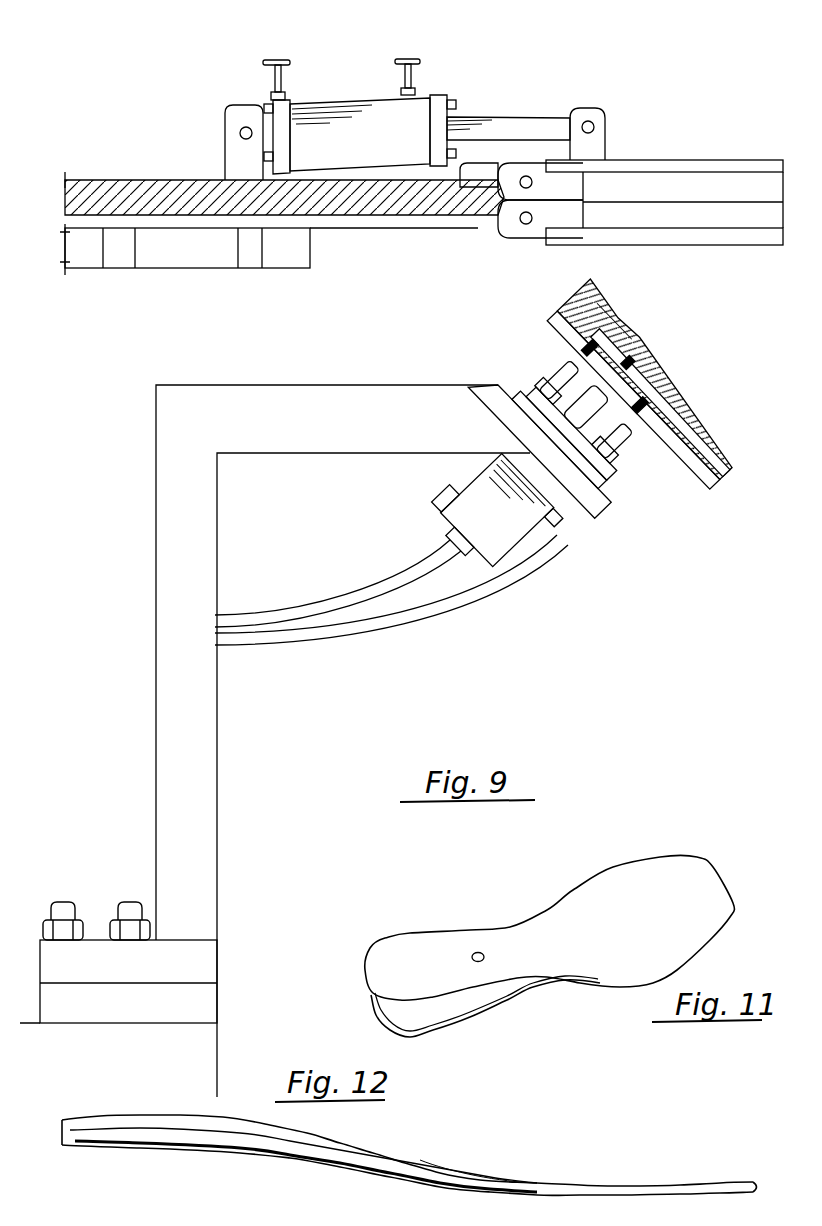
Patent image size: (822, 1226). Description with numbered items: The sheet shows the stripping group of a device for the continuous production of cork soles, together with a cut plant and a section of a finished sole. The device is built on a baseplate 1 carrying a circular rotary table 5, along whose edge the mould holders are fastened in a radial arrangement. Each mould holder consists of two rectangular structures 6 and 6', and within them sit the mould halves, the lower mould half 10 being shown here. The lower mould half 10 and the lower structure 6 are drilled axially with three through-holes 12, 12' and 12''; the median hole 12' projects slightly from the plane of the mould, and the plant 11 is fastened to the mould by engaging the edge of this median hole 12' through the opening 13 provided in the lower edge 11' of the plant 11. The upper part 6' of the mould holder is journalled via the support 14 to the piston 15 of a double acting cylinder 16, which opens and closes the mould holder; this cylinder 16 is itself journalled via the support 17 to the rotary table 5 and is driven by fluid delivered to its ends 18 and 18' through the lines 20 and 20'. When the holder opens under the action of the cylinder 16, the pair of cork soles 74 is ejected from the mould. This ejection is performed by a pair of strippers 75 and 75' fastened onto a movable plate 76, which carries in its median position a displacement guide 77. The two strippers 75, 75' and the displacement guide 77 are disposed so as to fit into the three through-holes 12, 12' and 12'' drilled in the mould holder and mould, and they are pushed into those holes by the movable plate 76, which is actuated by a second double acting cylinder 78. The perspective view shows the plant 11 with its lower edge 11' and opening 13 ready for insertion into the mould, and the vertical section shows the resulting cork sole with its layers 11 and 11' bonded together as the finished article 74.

In FIG. 9, the baseplate 1 is at (190, 897).
In FIG. 9, the table 5 is at (200, 203).
In FIG. 9, the rectangular structure of mould holder 6 is at (655, 408).
In FIG. 9, the rectangular structure of mould holder 6' is at (621, 173).
In FIG. 9, the mould half 10 is at (673, 463).
In FIG. 9, the through-hole 12 is at (683, 386).
In FIG. 9, the median through-hole 12' is at (669, 342).
In FIG. 9, the through-hole 12'' is at (621, 311).
In FIG. 9, the support 14 is at (597, 137).
In FIG. 9, the piston 15 is at (520, 127).
In FIG. 9, the double acting cylinder 16 is at (345, 120).
In FIG. 9, the support 17 is at (240, 118).
In FIG. 9, the cylinder end 18 is at (296, 101).
In FIG. 9, the cylinder end 18' is at (470, 106).
In FIG. 9, the line 20 is at (261, 50).
In FIG. 9, the line 20' is at (432, 47).
In FIG. 9, the pair of cork soles 74 is at (620, 330).
In FIG. 12, the pair of cork soles 74 is at (490, 1160).
In FIG. 9, the stripper 75 is at (548, 367).
In FIG. 9, the stripper 75' is at (634, 460).
In FIG. 9, the movable plate 76 is at (608, 480).
In FIG. 9, the displacement guide 77 is at (585, 410).
In FIG. 9, the double acting cylinder 78 is at (513, 520).
In FIG. 11, the plant 11 is at (485, 1037).
In FIG. 12, the plant 11 is at (409, 1158).
In FIG. 11, the lower edge of plant 11' is at (550, 918).
In FIG. 12, the lower edge of plant 11' is at (407, 1163).
In FIG. 11, the opening 13 is at (480, 953).